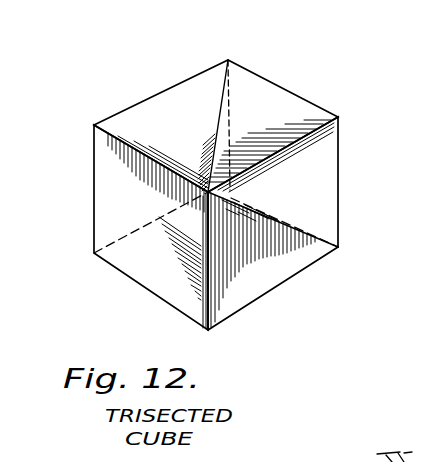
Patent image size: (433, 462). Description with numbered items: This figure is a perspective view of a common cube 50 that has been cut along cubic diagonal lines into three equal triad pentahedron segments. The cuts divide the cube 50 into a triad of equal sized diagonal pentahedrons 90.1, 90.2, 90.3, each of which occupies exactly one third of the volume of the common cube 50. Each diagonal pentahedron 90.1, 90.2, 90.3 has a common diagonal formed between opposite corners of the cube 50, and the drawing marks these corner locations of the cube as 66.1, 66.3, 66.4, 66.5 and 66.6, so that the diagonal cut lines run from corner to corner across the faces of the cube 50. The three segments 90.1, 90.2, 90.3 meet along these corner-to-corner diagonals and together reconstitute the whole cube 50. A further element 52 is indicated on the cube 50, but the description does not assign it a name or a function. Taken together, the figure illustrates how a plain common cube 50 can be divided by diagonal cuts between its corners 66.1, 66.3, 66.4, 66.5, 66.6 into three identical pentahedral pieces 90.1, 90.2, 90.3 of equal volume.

The common cube 50 is at (342, 85).
The top face of cube 52 is at (160, 103).
The corner of the cube 66.1 is at (228, 60).
The corner of the cube 66.3 is at (338, 247).
The corner of the cube 66.4 is at (236, 190).
The corner of the cube 66.5 is at (94, 253).
The corner of the cube 66.6 is at (208, 330).
The diagonal pentahedron 90.1 is at (107, 185).
The diagonal pentahedron 90.2 is at (327, 145).
The diagonal pentahedron 90.3 is at (278, 272).